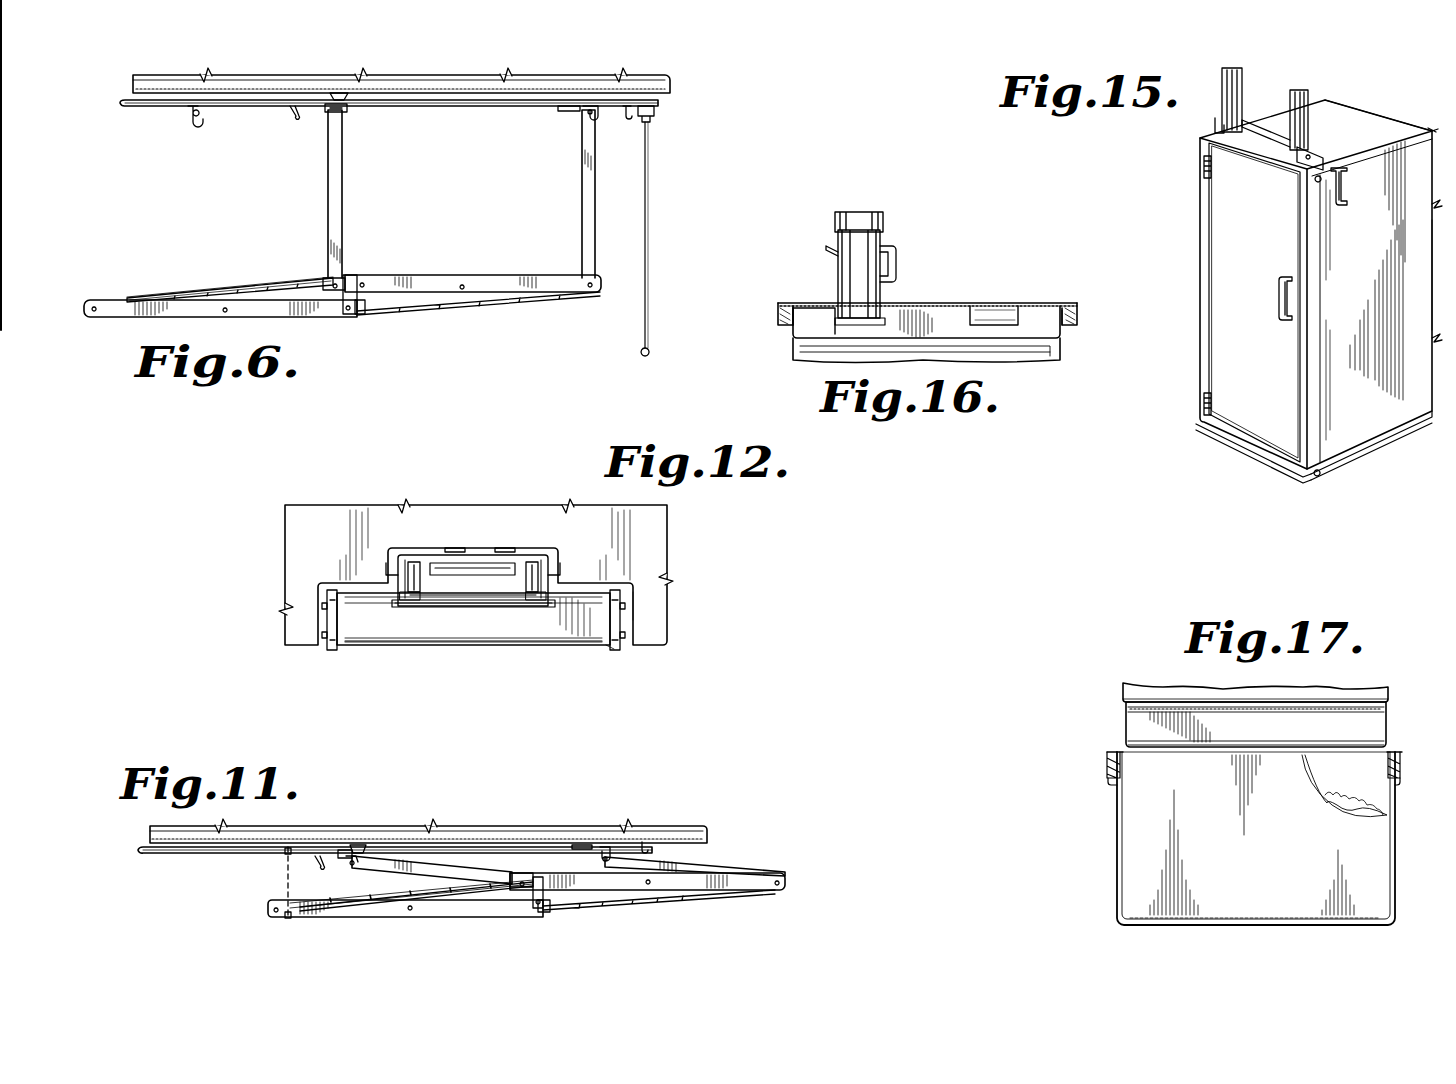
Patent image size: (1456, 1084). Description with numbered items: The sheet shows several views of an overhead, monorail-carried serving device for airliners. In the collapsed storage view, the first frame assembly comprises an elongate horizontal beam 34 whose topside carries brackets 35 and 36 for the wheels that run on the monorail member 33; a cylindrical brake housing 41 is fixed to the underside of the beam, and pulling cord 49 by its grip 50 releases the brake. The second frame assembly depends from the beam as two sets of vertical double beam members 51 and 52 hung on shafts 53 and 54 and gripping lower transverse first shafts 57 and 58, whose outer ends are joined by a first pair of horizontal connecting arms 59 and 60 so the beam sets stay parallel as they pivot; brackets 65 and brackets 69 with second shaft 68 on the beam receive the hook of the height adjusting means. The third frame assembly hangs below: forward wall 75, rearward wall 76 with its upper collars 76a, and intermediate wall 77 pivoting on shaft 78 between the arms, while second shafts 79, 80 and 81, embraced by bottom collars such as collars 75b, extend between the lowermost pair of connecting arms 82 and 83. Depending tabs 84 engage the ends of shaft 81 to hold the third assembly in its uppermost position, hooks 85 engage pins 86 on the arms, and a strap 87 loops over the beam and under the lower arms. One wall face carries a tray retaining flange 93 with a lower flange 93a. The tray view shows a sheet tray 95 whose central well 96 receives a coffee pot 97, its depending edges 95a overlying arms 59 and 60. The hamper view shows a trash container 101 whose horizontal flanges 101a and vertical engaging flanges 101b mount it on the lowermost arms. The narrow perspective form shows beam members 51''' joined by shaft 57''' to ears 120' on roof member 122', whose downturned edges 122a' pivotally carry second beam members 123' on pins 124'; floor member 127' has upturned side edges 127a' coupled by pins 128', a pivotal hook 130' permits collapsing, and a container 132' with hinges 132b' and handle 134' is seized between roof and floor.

In FIG. 6, the upper track rail 33 is at (438, 80).
In FIG. 11, the upper track rail 33 is at (467, 826).
In FIG. 6, the beam 34 is at (470, 106).
In FIG. 12, the beam 34 is at (501, 552).
In FIG. 11, the beam 34 is at (512, 846).
In FIG. 6, the brackets 35 is at (346, 90).
In FIG. 12, the brackets 35 is at (454, 550).
In FIG. 11, the brackets 35 is at (364, 846).
In FIG. 6, the brackets 36 is at (578, 110).
In FIG. 11, the brackets 36 is at (580, 840).
In FIG. 6, the cylindrical housing 41 is at (654, 120).
In FIG. 6, the pull cord 49 is at (648, 248).
In FIG. 6, the grip 50 is at (641, 356).
In FIG. 6, the front double beam members 51 is at (317, 194).
In FIG. 12, the front double beam members 51 is at (473, 580).
In FIG. 11, the front double beam members 51 is at (432, 867).
In FIG. 6, the rear double beam members 52 is at (582, 229).
In FIG. 11, the rear double beam members 52 is at (711, 872).
In FIG. 6, the shaft 53 is at (344, 114).
In FIG. 12, the shaft 53 is at (471, 563).
In FIG. 11, the shaft 53 is at (341, 846).
In FIG. 6, the shaft 54 is at (592, 118).
In FIG. 11, the shaft 54 is at (608, 856).
In FIG. 6, the forward lower shaft 57 is at (316, 270).
In FIG. 12, the forward lower shaft 57 is at (473, 618).
In FIG. 11, the forward lower shaft 57 is at (531, 868).
In FIG. 6, the lower rear shaft 58 is at (588, 290).
In FIG. 11, the lower rear shaft 58 is at (776, 880).
In FIG. 6, the connecting arm 59 is at (434, 275).
In FIG. 16, the connecting arm 59 is at (1068, 333).
In FIG. 12, the connecting arm 59 is at (615, 592).
In FIG. 11, the connecting arm 59 is at (594, 874).
In FIG. 16, the connecting arm 60 is at (786, 333).
In FIG. 12, the connecting arm 60 is at (342, 578).
In FIG. 6, the brackets 65 is at (642, 136).
In FIG. 11, the brackets 65 is at (642, 842).
In FIG. 11, the second shaft 68 is at (353, 864).
In FIG. 6, the brackets 69 is at (290, 115).
In FIG. 11, the brackets 69 is at (311, 862).
In FIG. 6, the forward transverse wall member 75 is at (242, 294).
In FIG. 12, the forward transverse wall member 75 is at (396, 630).
In FIG. 11, the forward transverse wall member 75 is at (391, 904).
In FIG. 12, the collars 75b is at (509, 645).
In FIG. 6, the rearward wall member 76 is at (432, 308).
In FIG. 11, the rearward wall member 76 is at (665, 898).
In FIG. 17, the rearward wall member 76 is at (1158, 696).
In FIG. 16, the collars 76a is at (960, 304).
In FIG. 6, the intermediate wall member 77 is at (304, 292).
In FIG. 11, the intermediate wall member 77 is at (502, 896).
In FIG. 6, the transverse shaft 78 is at (478, 264).
In FIG. 11, the transverse shaft 78 is at (626, 884).
In FIG. 6, the second shaft 79 is at (96, 302).
In FIG. 11, the second shaft 79 is at (275, 908).
In FIG. 6, the second shaft 80 is at (222, 310).
In FIG. 11, the second shaft 80 is at (410, 906).
In FIG. 6, the second shaft 81 is at (358, 314).
In FIG. 12, the second shaft 81 is at (620, 630).
In FIG. 11, the second shaft 81 is at (548, 910).
In FIG. 6, the connecting arm 82 is at (190, 296).
In FIG. 12, the connecting arm 82 is at (620, 645).
In FIG. 11, the connecting arm 82 is at (367, 918).
In FIG. 17, the connecting arm 82 is at (1398, 780).
In FIG. 12, the connecting arm 83 is at (330, 654).
In FIG. 17, the connecting arm 83 is at (1108, 782).
In FIG. 6, the depending tabs 84 is at (344, 308).
In FIG. 12, the depending tabs 84 is at (327, 617).
In FIG. 11, the depending tabs 84 is at (538, 906).
In FIG. 6, the hooks 85 is at (204, 126).
In FIG. 12, the hooks 85 is at (391, 572).
In FIG. 6, the pins 86 is at (372, 278).
In FIG. 11, the strap 87 is at (286, 880).
In FIG. 16, the tray retaining flange 93 is at (968, 340).
In FIG. 17, the tray retaining flange 93 is at (1324, 698).
In FIG. 16, the container bottom 93a is at (1030, 350).
In FIG. 16, the tray 95 is at (836, 266).
In FIG. 16, the lateral depending edges 95a is at (776, 306).
In FIG. 16, the central well 96 is at (836, 322).
In FIG. 16, the coffee pot 97 is at (826, 252).
In FIG. 17, the trash container 101 is at (1120, 850).
In FIG. 17, the horizontal flanges 101a is at (1116, 752).
In FIG. 17, the engaging flanges 101b is at (1107, 766).
In FIG. 15, the beam members 51''' is at (1265, 100).
In FIG. 15, the first shaft 57''' is at (1266, 116).
In FIG. 15, the flanges or ears 120' is at (1256, 139).
In FIG. 15, the roof member 122' is at (1378, 99).
In FIG. 15, the side edges 122a' is at (1432, 111).
In FIG. 15, the second beam members 123' is at (1293, 284).
In FIG. 15, the pins or shafts 124' is at (1287, 189).
In FIG. 15, the floor member 127' is at (1253, 458).
In FIG. 15, the side edges 127a' is at (1381, 445).
In FIG. 15, the pins or shafts 128' is at (1347, 477).
In FIG. 15, the pivotal hook 130' is at (1348, 205).
In FIG. 15, the container 132' is at (1444, 275).
In FIG. 15, the hinges 132b' is at (1178, 285).
In FIG. 15, the handle 134' is at (1273, 285).